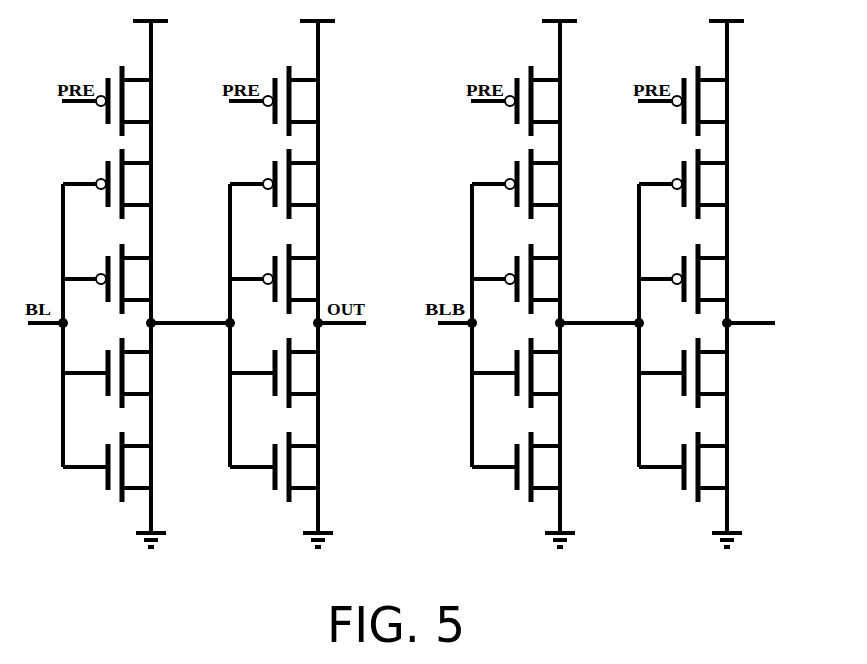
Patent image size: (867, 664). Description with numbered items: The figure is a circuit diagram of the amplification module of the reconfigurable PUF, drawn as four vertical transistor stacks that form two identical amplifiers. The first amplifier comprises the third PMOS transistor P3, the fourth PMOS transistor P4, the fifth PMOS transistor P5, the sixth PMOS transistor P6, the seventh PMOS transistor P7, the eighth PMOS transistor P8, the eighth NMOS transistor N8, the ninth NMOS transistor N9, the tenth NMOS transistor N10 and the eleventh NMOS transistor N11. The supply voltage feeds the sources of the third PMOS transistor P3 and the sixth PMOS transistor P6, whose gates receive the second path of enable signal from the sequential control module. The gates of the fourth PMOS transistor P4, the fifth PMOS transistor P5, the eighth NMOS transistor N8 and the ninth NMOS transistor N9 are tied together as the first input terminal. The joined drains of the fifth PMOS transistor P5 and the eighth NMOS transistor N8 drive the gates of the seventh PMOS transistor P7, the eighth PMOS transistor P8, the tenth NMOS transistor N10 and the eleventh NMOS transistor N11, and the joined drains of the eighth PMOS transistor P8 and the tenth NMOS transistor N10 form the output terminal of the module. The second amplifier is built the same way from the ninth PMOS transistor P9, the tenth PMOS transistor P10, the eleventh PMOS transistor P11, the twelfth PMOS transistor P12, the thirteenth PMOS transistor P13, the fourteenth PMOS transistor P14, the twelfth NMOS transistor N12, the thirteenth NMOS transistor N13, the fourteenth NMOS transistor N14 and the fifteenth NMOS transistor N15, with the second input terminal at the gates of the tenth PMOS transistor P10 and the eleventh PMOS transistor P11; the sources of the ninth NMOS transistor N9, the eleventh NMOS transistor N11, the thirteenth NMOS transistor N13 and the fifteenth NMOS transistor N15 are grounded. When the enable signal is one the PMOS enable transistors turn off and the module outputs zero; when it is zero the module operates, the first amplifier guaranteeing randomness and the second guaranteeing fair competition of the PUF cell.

The third PMOS transistor P3 is at (108, 101).
The fourth PMOS transistor P4 is at (109, 184).
The fifth PMOS transistor P5 is at (109, 279).
The eighth NMOS transistor N8 is at (110, 373).
The ninth NMOS transistor N9 is at (110, 467).
The sixth PMOS transistor P6 is at (275, 101).
The seventh PMOS transistor P7 is at (276, 184).
The eighth PMOS transistor P8 is at (276, 279).
The tenth NMOS transistor N10 is at (281, 373).
The eleventh NMOS transistor N11 is at (280, 467).
The ninth PMOS transistor P9 is at (517, 101).
The tenth PMOS transistor P10 is at (522, 184).
The eleventh PMOS transistor P11 is at (521, 279).
The twelfth NMOS transistor N12 is at (523, 373).
The thirteenth NMOS transistor N13 is at (523, 467).
The twelfth PMOS transistor P12 is at (689, 101).
The thirteenth PMOS transistor P13 is at (689, 184).
The fourteenth PMOS transistor P14 is at (689, 279).
The fourteenth NMOS transistor N14 is at (690, 373).
The fifteenth NMOS transistor N15 is at (690, 467).